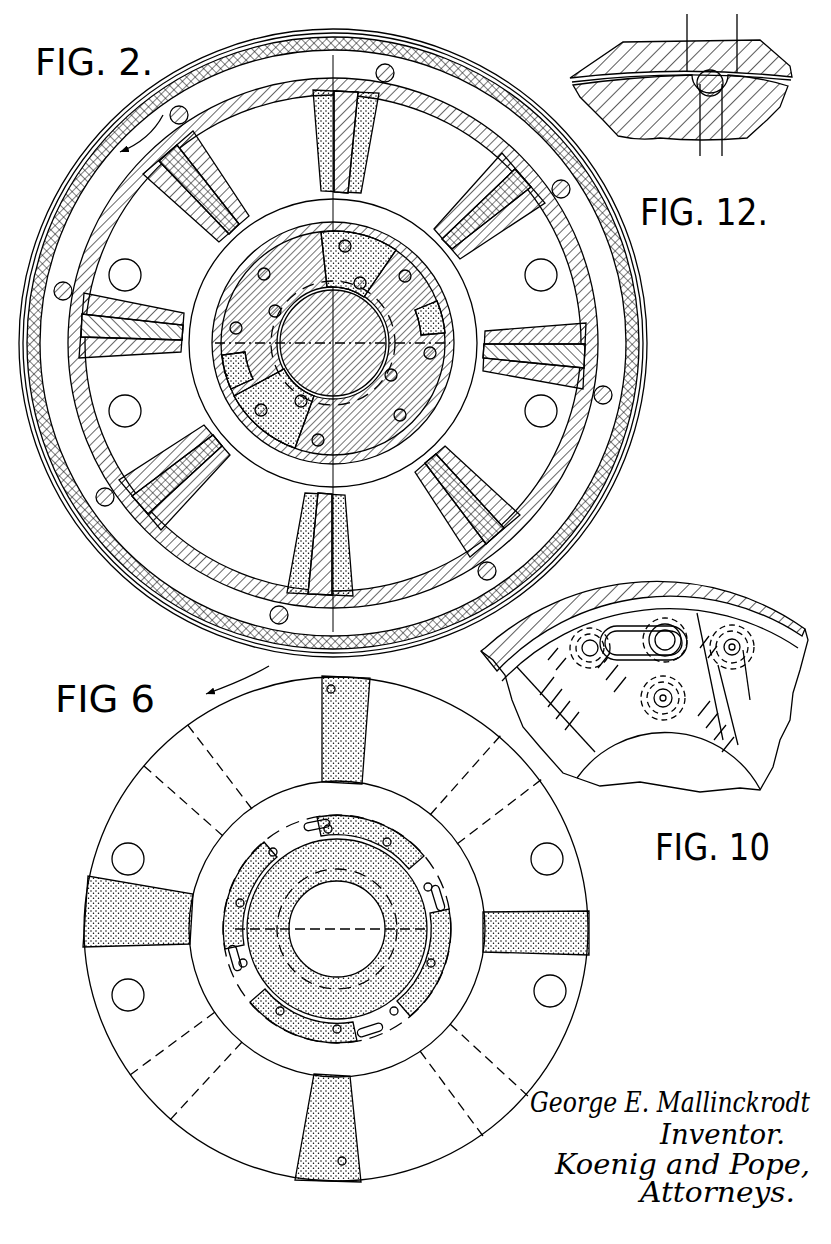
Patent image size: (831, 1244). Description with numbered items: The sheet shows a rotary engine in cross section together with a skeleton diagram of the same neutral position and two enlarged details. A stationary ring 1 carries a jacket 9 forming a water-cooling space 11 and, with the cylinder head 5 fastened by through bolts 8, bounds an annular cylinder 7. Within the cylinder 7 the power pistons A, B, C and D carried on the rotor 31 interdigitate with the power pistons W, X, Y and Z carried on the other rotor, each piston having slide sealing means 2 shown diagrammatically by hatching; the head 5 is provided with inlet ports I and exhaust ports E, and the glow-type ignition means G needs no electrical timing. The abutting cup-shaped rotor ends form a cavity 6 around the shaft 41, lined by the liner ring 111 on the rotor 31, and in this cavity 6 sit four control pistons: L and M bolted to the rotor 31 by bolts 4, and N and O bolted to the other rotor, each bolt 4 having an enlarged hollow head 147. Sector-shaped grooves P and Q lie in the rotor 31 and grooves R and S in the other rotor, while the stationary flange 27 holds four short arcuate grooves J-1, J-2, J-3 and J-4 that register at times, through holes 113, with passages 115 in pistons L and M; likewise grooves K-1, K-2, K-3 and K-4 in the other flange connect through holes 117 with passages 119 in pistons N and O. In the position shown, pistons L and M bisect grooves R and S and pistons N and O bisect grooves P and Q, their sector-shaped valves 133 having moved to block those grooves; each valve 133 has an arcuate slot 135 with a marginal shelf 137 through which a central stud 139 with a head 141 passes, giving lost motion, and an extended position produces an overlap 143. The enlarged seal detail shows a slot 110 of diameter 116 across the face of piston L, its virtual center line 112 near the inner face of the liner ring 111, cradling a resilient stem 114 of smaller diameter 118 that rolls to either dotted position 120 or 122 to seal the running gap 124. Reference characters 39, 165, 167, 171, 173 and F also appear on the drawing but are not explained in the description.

In FIG. 2, the stationary ring 1 is at (346, 62).
In FIG. 2, the slide sealing means 2 is at (362, 108).
In FIG. 2, the bolts 4 is at (249, 269).
In FIG. 10, the bolts 4 is at (596, 614).
In FIG. 2, the cylinder head 5 is at (455, 122).
In FIG. 2, the cavity 6 is at (228, 377).
In FIG. 10, the cavity 6 is at (755, 750).
In FIG. 2, the annular cylinder 7 is at (250, 118).
In FIG. 2, the through bolts 8 is at (395, 72).
In FIG. 2, the jacket 9 is at (88, 172).
In FIG. 2, the water-cooling space 11 is at (205, 72).
In FIG. 10, the water-cooling space 11 is at (510, 683).
In FIG. 2, the flange 27 is at (205, 280).
In FIG. 2, the rotor 31 is at (200, 282).
In FIG. 6, the rotor 31 is at (283, 782).
In FIG. 2, the hub segment 39 is at (390, 315).
In FIG. 2, the shaft 41 is at (332, 343).
In FIG. 2, the slot 110 is at (225, 292).
In FIG. 6, the slot 110 is at (215, 862).
In FIG. 12, the slot 110 is at (728, 84).
In FIG. 10, the slot 110 is at (690, 600).
In FIG. 2, the liner ring 111 is at (282, 240).
In FIG. 12, the liner ring 111 is at (582, 63).
In FIG. 12, the virtual center line 112 is at (681, 61).
In FIG. 2, the holes 113 is at (240, 433).
In FIG. 6, the holes 113 is at (295, 1045).
In FIG. 12, the sealing stem 114 is at (680, 107).
In FIG. 10, the sealing stem 114 is at (672, 593).
In FIG. 2, the passages 115 is at (405, 261).
In FIG. 6, the passages 115 is at (333, 812).
In FIG. 12, the slot diameter 116 is at (688, 18).
In FIG. 6, the holes 117 is at (435, 1000).
In FIG. 12, the stem diameter 118 is at (740, 152).
In FIG. 6, the passages 119 is at (428, 1010).
In FIG. 12, the dotted-line position 120 is at (640, 95).
In FIG. 12, the dotted-line position 122 is at (745, 62).
In FIG. 12, the running gap 124 is at (638, 78).
In FIG. 2, the valve 133 is at (262, 244).
In FIG. 6, the valve 133 is at (270, 840).
In FIG. 10, the valve 133 is at (601, 742).
In FIG. 10, the arcuate slot 135 is at (638, 630).
In FIG. 10, the marginal shelf 137 is at (612, 626).
In FIG. 10, the central stud 139 is at (736, 622).
In FIG. 10, the head 141 is at (640, 658).
In FIG. 10, the overlap 143 is at (574, 718).
In FIG. 10, the enlarged hollow head 147 is at (760, 648).
In FIG. 6, the arc segment 165 is at (343, 925).
In FIG. 2, the arc 167 is at (333, 343).
In FIG. 6, the arc 167 is at (337, 929).
In FIG. 6, the segment 171 is at (338, 927).
In FIG. 2, the block 173 is at (333, 345).
In FIG. 6, the block 173 is at (347, 920).
In FIG. 2, the power piston A is at (318, 130).
In FIG. 6, the power piston A is at (322, 722).
In FIG. 2, the power piston B is at (150, 345).
In FIG. 6, the power piston B is at (128, 946).
In FIG. 2, the power piston C is at (336, 553).
In FIG. 6, the power piston C is at (345, 1126).
In FIG. 2, the power piston D is at (535, 330).
In FIG. 6, the power piston D is at (530, 912).
In FIG. 2, the exhaust ports E is at (122, 260).
In FIG. 6, the exhaust ports E is at (118, 850).
In FIG. 2, the direction of rotation F is at (120, 120).
In FIG. 6, the direction of rotation F is at (228, 678).
In FIG. 2, the ignition means G is at (320, 100).
In FIG. 6, the ignition means G is at (326, 690).
In FIG. 2, the inlet ports I is at (142, 405).
In FIG. 6, the inlet ports I is at (531, 850).
In FIG. 2, the control piston L is at (358, 264).
In FIG. 6, the control piston L is at (345, 800).
In FIG. 12, the control piston L is at (770, 116).
In FIG. 10, the control piston L is at (720, 726).
In FIG. 2, the control piston M is at (274, 408).
In FIG. 6, the control piston M is at (313, 950).
In FIG. 2, the control piston N is at (265, 290).
In FIG. 6, the control piston N is at (304, 910).
In FIG. 2, the control piston O is at (418, 372).
In FIG. 6, the control piston O is at (372, 948).
In FIG. 2, the groove P is at (205, 347).
In FIG. 6, the groove P is at (292, 935).
In FIG. 2, the groove Q is at (412, 291).
In FIG. 6, the groove Q is at (375, 912).
In FIG. 6, the groove R is at (325, 850).
In FIG. 6, the groove S is at (350, 1008).
In FIG. 2, the power piston W is at (190, 200).
In FIG. 6, the power piston W is at (180, 778).
In FIG. 2, the power piston X is at (186, 511).
In FIG. 6, the power piston X is at (208, 1085).
In FIG. 2, the power piston Y is at (466, 462).
In FIG. 6, the power piston Y is at (478, 1033).
In FIG. 2, the power piston Z is at (480, 182).
In FIG. 6, the power piston Z is at (472, 765).
In FIG. 2, the arcuate groove J-1 is at (392, 229).
In FIG. 6, the arcuate groove J-1 is at (390, 812).
In FIG. 6, the arcuate groove J-2 is at (255, 862).
In FIG. 2, the arcuate groove J-3 is at (272, 456).
In FIG. 6, the arcuate groove J-3 is at (270, 1037).
In FIG. 6, the arcuate groove J-4 is at (455, 975).
In FIG. 6, the arcuate groove K-1 is at (441, 888).
In FIG. 6, the arcuate groove K-2 is at (316, 816).
In FIG. 6, the arcuate groove K-3 is at (230, 958).
In FIG. 6, the arcuate groove K-4 is at (374, 1034).